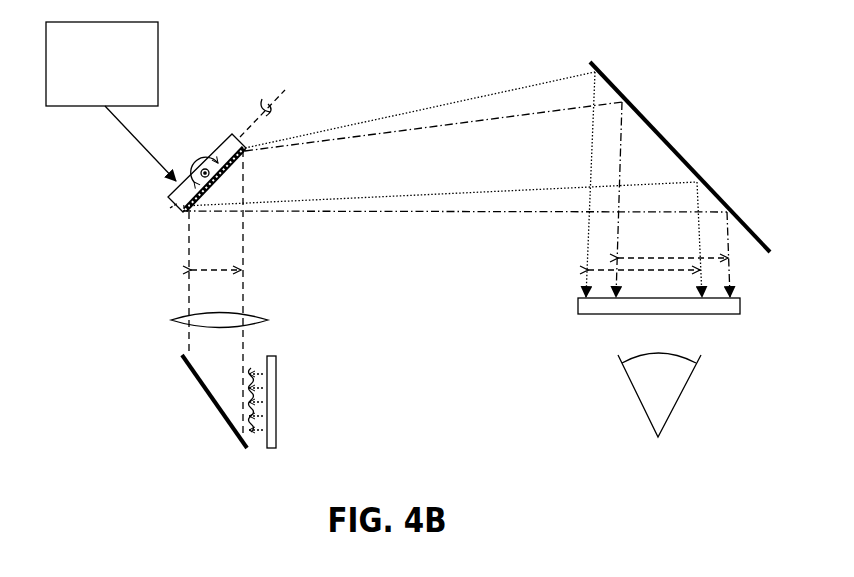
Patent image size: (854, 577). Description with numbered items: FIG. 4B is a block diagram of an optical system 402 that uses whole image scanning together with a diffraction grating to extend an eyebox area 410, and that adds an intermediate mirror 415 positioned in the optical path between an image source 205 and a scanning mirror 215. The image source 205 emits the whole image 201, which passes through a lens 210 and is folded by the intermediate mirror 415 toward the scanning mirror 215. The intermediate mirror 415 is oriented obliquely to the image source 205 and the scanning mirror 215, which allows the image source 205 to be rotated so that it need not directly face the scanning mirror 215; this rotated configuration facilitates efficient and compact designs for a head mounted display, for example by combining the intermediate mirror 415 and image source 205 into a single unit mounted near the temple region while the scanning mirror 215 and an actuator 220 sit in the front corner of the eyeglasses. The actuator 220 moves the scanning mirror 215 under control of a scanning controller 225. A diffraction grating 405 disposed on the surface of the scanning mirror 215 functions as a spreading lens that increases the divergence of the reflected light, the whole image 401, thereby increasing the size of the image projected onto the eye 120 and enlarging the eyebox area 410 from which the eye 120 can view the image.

The eye 120 is at (659, 395).
The whole image 201 is at (214, 268).
The image source 205 is at (277, 388).
The lens 210 is at (257, 317).
The scanning mirror 215 is at (178, 208).
The actuator 220 is at (226, 135).
The scanning controller 225 is at (111, 101).
The whole image 401 is at (592, 268).
The optical system 402 is at (582, 182).
The diffraction grating 405 is at (245, 150).
The eyebox area 410 is at (740, 306).
The intermediate mirror 415 is at (217, 412).